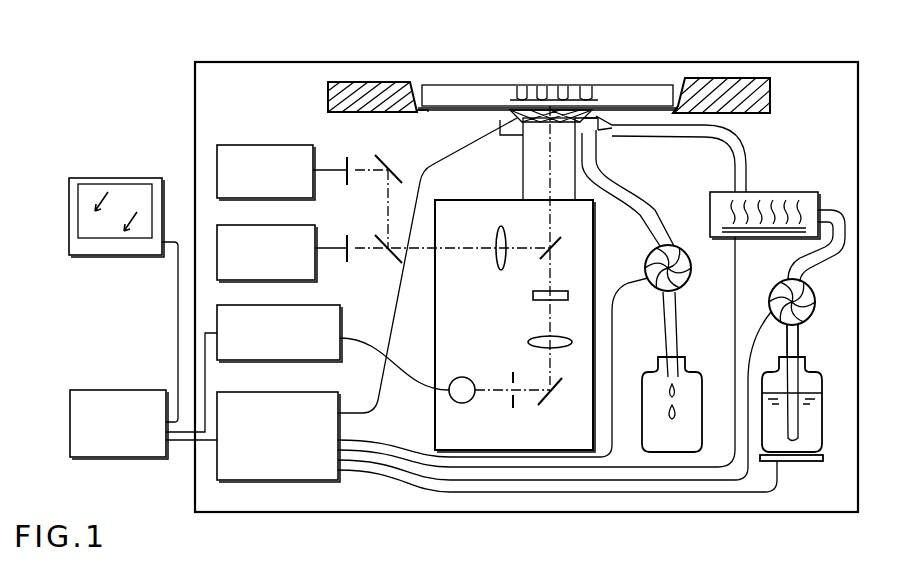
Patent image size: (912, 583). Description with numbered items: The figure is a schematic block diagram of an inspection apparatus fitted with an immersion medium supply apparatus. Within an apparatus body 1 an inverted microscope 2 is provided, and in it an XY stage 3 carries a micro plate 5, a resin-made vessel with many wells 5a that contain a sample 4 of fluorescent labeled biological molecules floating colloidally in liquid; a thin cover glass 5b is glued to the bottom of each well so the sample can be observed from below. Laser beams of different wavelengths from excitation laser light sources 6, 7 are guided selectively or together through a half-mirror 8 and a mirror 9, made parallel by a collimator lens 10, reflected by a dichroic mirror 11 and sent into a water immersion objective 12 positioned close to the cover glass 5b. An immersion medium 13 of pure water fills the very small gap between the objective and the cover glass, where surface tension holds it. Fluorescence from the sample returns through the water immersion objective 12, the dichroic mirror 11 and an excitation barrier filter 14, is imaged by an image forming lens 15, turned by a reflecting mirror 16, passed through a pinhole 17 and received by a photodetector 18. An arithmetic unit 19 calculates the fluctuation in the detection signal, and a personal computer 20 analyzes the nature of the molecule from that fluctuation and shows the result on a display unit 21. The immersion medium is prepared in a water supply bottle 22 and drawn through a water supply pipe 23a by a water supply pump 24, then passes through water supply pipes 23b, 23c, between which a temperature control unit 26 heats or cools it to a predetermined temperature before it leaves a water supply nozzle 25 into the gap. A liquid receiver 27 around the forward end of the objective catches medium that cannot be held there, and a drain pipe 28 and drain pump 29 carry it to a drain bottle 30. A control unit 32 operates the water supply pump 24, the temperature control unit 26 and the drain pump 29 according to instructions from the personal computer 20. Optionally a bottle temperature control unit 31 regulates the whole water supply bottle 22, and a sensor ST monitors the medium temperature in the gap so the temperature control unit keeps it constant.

The apparatus body 1 is at (240, 68).
The inverted microscope 2 is at (437, 312).
The XY stage 3 is at (328, 98).
The sample 4 is at (544, 86).
The micro plate 5 is at (628, 95).
The wells 5a is at (571, 86).
The cover glass 5b is at (656, 100).
The sensor ST is at (520, 85).
The excitation laser light source 6 is at (311, 281).
The excitation laser light source 7 is at (240, 145).
The half-mirror 8 is at (391, 262).
The mirror 9 is at (389, 160).
The collimator lens 10 is at (496, 241).
The dichroic mirror 11 is at (556, 245).
The water immersion objective 12 is at (523, 184).
The immersion medium 13 is at (533, 123).
The excitation barrier filter 14 is at (533, 296).
The image forming lens 15 is at (528, 342).
The reflecting mirror 16 is at (549, 405).
The pinhole 17 is at (513, 410).
The photodetector 18 is at (462, 403).
The arithmetic unit 19 is at (338, 361).
The personal computer 20 is at (115, 460).
The display unit 21 is at (115, 258).
The water supply bottle 22 is at (816, 383).
The water supply pipe 23a is at (800, 339).
The water supply pipe 23b is at (851, 238).
The water supply pipe 23c is at (733, 147).
The water supply pump 24 is at (816, 303).
The water supply nozzle 25 is at (603, 130).
The temperature control unit 26 is at (808, 193).
The liquid receiver 27 is at (500, 135).
The drain pipe 28 is at (641, 196).
The drain pump 29 is at (692, 269).
The drain bottle 30 is at (694, 418).
The bottle temperature control unit 31 is at (807, 463).
The control unit 32 is at (333, 482).